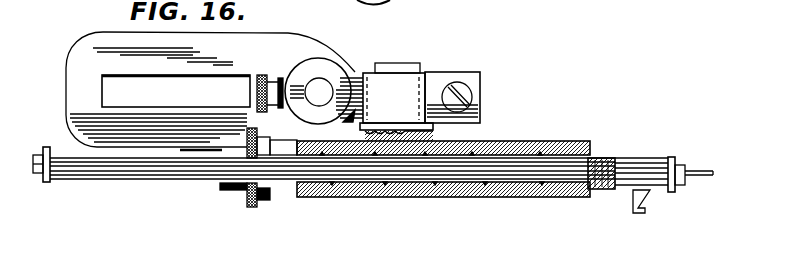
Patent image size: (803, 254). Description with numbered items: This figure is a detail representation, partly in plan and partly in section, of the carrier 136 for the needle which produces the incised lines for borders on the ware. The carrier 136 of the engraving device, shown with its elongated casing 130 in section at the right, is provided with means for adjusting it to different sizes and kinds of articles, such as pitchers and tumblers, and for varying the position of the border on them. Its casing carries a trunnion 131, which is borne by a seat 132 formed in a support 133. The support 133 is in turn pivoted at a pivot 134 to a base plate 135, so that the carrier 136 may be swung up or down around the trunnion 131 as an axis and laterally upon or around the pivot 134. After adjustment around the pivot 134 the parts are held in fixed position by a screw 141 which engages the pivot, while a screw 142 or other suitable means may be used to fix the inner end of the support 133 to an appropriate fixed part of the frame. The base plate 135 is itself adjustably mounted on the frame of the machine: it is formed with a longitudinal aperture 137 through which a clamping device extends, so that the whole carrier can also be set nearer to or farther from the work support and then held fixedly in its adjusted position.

The cylinder 130 is at (403, 195).
The trunnion 131 is at (459, 69).
The seat 132 is at (413, 77).
The support 133 is at (357, 70).
The pivot 134 is at (312, 90).
The base plate 135 is at (280, 53).
The carrier 136 is at (373, 148).
The longitudinal aperture 137 is at (220, 98).
The screw 141 is at (258, 108).
The screw 142 is at (452, 99).